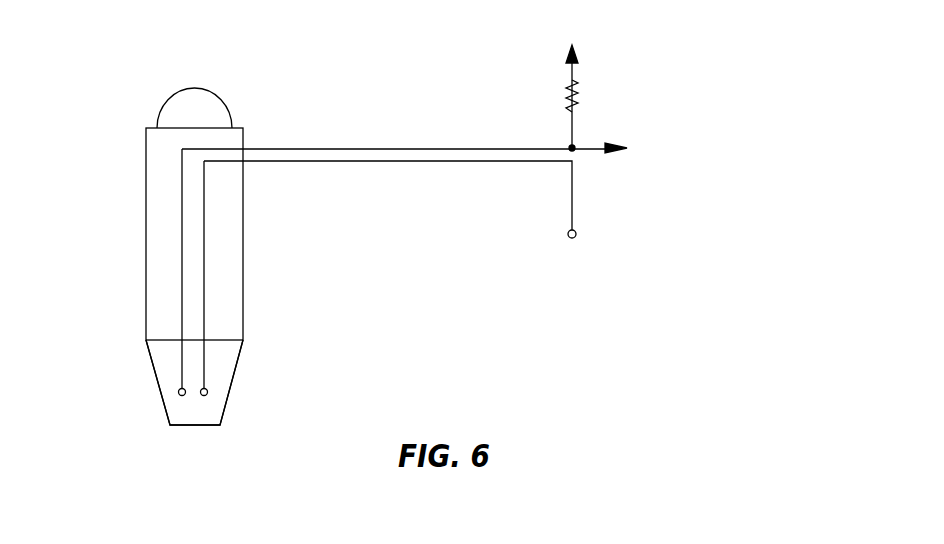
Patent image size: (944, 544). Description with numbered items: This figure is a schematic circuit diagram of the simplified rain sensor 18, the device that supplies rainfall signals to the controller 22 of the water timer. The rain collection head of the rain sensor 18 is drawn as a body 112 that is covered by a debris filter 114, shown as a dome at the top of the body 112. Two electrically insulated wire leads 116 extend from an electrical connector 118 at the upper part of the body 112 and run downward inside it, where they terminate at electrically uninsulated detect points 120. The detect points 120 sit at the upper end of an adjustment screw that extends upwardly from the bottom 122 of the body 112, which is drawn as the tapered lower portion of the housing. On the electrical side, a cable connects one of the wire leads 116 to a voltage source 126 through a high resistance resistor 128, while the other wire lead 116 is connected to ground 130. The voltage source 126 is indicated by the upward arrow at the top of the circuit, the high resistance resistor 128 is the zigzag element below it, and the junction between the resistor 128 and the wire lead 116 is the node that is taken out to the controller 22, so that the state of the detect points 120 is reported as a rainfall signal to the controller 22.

The rain sensor 18 is at (110, 58).
The controller 22 is at (728, 155).
The body 112 is at (134, 257).
The debris filter 114 is at (212, 92).
The wire leads 116 is at (182, 228).
The electrical connector 118 is at (243, 147).
The detect points 120 is at (185, 389).
The bottom 122 is at (156, 378).
The voltage source 126 is at (578, 54).
The high resistance resistor 128 is at (580, 101).
The ground 130 is at (576, 230).